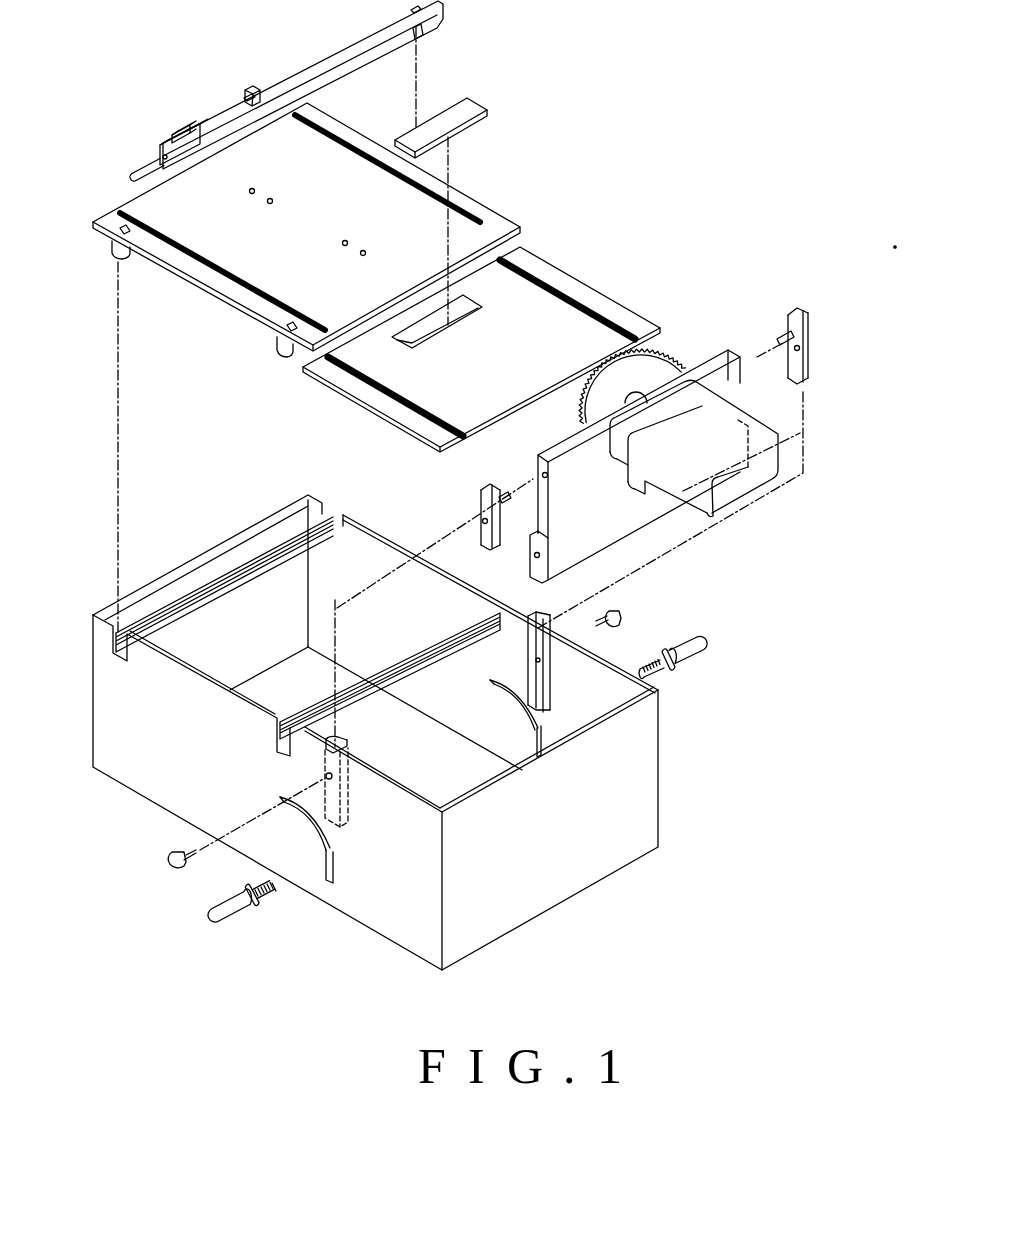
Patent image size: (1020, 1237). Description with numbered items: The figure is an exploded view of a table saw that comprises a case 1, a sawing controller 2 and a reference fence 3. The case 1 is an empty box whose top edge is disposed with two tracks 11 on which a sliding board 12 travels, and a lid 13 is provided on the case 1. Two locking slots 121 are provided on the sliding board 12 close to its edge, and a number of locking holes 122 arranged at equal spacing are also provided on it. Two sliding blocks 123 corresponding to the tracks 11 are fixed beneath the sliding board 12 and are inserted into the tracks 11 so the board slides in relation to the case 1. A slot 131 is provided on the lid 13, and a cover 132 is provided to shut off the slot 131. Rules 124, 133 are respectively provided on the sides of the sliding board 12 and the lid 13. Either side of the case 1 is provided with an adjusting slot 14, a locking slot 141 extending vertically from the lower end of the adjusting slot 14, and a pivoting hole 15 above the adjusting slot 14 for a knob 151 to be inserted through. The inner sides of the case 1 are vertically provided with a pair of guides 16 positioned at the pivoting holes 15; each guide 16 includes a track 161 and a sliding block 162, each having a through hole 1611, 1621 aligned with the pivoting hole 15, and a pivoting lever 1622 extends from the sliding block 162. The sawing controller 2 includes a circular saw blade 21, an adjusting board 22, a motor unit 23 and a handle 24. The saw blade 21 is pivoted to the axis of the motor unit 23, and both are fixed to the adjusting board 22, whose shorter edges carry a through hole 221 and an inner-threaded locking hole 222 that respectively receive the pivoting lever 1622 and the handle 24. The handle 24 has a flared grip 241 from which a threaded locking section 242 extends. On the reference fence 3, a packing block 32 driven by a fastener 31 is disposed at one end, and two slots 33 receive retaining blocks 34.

The case 1 is at (485, 918).
The tracks 11 is at (337, 530).
The sliding board 12 is at (330, 248).
The locking slots 121 is at (123, 228).
The locking holes 122 is at (270, 203).
The sliding blocks 123 is at (280, 347).
The rule 124 is at (477, 220).
The lid 13 is at (471, 239).
The slot 131 is at (468, 307).
The cover 132 is at (473, 113).
The rule 133 is at (607, 315).
The adjusting slot 14 is at (300, 830).
The locking slot 141 is at (333, 878).
The pivoting hole 15 is at (326, 777).
The knob 151 is at (172, 853).
The guides 16 is at (593, 551).
The track 161 is at (348, 750).
The through hole 1611 is at (548, 655).
The sliding block 162 is at (497, 540).
The through hole 1621 is at (482, 520).
The pivoting lever 1622 is at (503, 496).
The sawing controller 2 is at (654, 426).
The circular saw blade 21 is at (652, 367).
The adjusting board 22 is at (635, 451).
The through hole 221 is at (546, 455).
The locking hole 222 is at (543, 555).
The motor unit 23 is at (722, 413).
The handle 24 is at (493, 822).
The flared grip 241 is at (232, 918).
The threaded locking section 242 is at (268, 895).
The reference fence 3 is at (299, 91).
The fastener 31 is at (138, 163).
The packing block 32 is at (182, 130).
The slots 33 is at (245, 97).
The retaining blocks 34 is at (247, 90).